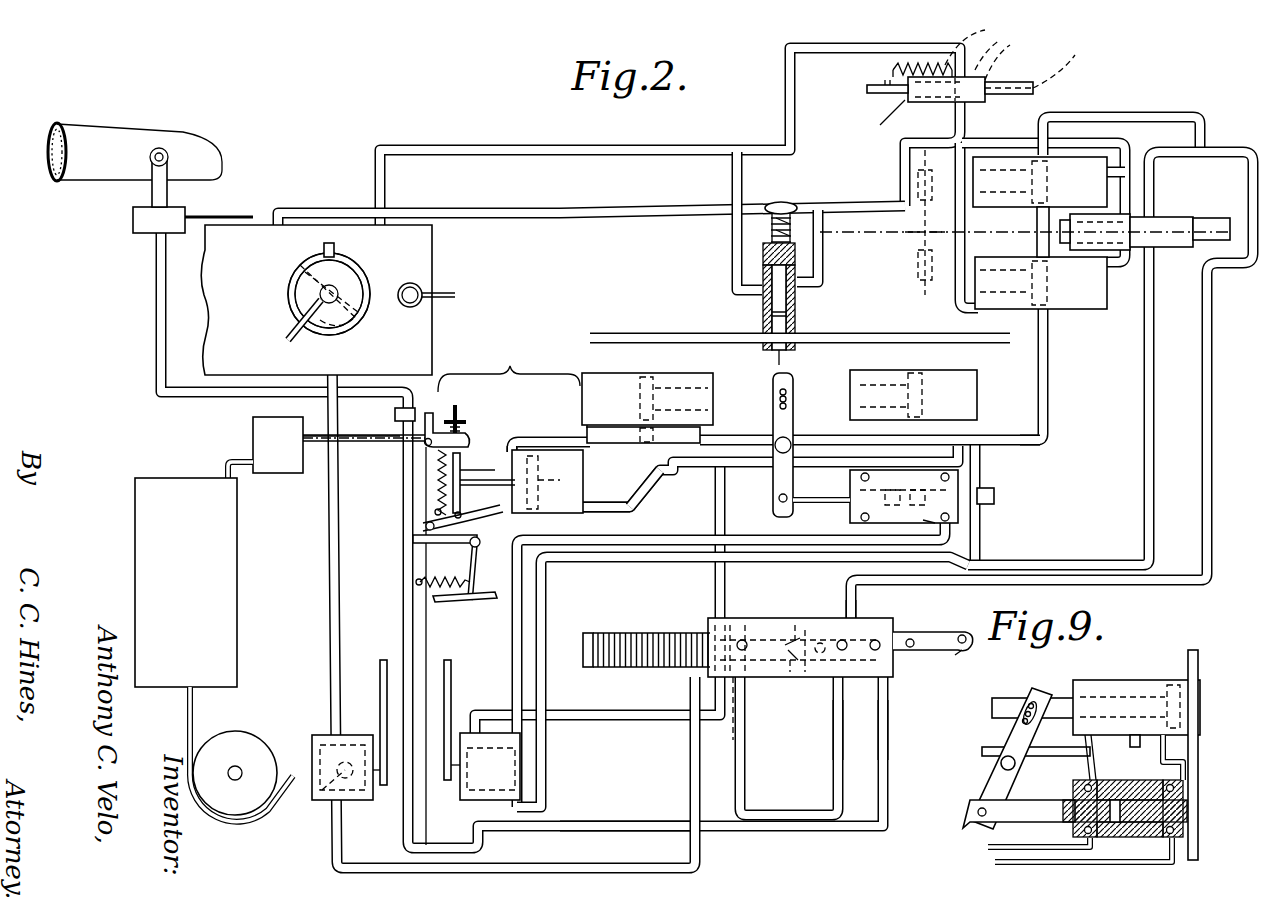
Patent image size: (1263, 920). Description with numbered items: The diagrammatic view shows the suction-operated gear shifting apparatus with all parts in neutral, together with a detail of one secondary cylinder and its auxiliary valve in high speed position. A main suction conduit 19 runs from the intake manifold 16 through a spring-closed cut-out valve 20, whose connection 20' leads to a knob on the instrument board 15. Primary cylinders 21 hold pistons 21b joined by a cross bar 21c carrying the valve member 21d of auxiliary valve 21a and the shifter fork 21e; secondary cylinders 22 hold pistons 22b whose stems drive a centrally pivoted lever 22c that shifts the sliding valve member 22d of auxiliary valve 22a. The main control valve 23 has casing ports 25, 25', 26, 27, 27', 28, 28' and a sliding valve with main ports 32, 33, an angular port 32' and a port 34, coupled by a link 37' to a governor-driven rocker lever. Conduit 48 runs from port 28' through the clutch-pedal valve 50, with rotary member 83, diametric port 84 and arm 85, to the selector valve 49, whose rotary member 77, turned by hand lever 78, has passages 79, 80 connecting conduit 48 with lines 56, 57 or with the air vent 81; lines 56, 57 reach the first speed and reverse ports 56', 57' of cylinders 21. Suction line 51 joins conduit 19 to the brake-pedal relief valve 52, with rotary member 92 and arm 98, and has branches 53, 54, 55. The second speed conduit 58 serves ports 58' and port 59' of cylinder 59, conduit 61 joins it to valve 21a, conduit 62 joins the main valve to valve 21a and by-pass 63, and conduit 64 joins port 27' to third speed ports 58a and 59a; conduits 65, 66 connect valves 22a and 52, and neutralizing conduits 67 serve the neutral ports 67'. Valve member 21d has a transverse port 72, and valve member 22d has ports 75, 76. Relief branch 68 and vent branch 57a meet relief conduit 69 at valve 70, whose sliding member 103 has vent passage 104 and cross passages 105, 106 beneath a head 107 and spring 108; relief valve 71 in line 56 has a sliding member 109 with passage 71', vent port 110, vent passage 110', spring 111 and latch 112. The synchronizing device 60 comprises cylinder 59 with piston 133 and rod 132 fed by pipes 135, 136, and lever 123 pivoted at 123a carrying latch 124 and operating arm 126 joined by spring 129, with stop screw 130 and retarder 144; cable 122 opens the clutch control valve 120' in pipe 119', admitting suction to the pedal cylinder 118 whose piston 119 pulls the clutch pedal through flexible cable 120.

In FIG. 2, the instrument board 15 is at (432, 320).
In FIG. 2, the intake manifold 16 is at (134, 133).
In FIG. 2, the main suction pipe 19 is at (158, 275).
In FIG. 2, the cut-out valve 20 is at (135, 190).
In FIG. 2, the connection 20' is at (219, 201).
In FIG. 2, the primary gear shifting cylinders 21 is at (1085, 155).
In FIG. 2, the auxiliary control valve 21a is at (1160, 280).
In FIG. 2, the piston 21b is at (1047, 160).
In FIG. 2, the cross bar 21c is at (920, 233).
In FIG. 2, the movable valve member 21d is at (1203, 225).
In FIG. 2, the shifter fork 21e is at (922, 262).
In FIG. 2, the secondary gear shifting cylinders 22 is at (628, 372).
In FIG. 9, the secondary gear shifting cylinders 22 is at (1155, 680).
In FIG. 2, the auxiliary control valve 22a is at (923, 521).
In FIG. 9, the auxiliary control valve 22a is at (1160, 768).
In FIG. 2, the piston 22b is at (655, 385).
In FIG. 9, the piston 22b is at (1165, 700).
In FIG. 2, the centrally pivoted lever 22c is at (772, 390).
In FIG. 9, the centrally pivoted lever 22c is at (1035, 690).
In FIG. 2, the sliding valve member 22d is at (995, 495).
In FIG. 9, the sliding valve member 22d is at (1052, 800).
In FIG. 2, the main control valve 23 is at (800, 672).
In FIG. 2, the port 25 is at (773, 655).
In FIG. 2, the port 25' is at (731, 632).
In FIG. 2, the port 26 is at (840, 645).
In FIG. 2, the port 27 is at (933, 658).
In FIG. 2, the port 27' is at (903, 631).
In FIG. 2, the port 28 is at (758, 671).
In FIG. 2, the port 28' is at (722, 713).
In FIG. 2, the main port 32 is at (667, 629).
In FIG. 2, the angular port 32' is at (808, 655).
In FIG. 2, the main port 33 is at (860, 608).
In FIG. 2, the port 34 is at (798, 630).
In FIG. 2, the link 37' is at (965, 657).
In FIG. 2, the suction conduit 48 is at (328, 568).
In FIG. 2, the selector valve 49 is at (340, 265).
In FIG. 2, the automatic control valve 50 is at (318, 735).
In FIG. 2, the suction line 51 is at (655, 822).
In FIG. 2, the neutralizing or relief valve 52 is at (482, 735).
In FIG. 2, the branch 53 is at (746, 742).
In FIG. 2, the branch 54 is at (838, 712).
In FIG. 2, the branch 55 is at (889, 727).
In FIG. 2, the suction line 56 is at (670, 172).
In FIG. 2, the first speed port 56' is at (1141, 210).
In FIG. 2, the suction line 57 is at (591, 236).
In FIG. 2, the reverse port 57' is at (1039, 225).
In FIG. 2, the vent branch 57a is at (880, 232).
In FIG. 2, the second speed conduit 58 is at (770, 476).
In FIG. 9, the second speed conduit 58 is at (1026, 727).
In FIG. 2, the second speed port 58' is at (699, 411).
In FIG. 2, the third speed port 58a is at (990, 412).
In FIG. 2, the control cylinder 59 is at (563, 481).
In FIG. 2, the second speed port 59' is at (503, 422).
In FIG. 2, the third speed port 59a is at (605, 510).
In FIG. 2, the synchronizing device 60 is at (509, 368).
In FIG. 2, the conduit 61 is at (1066, 572).
In FIG. 2, the conduit 62 is at (1138, 586).
In FIG. 2, the by-pass 63 is at (1215, 158).
In FIG. 2, the suction conduit 64 is at (865, 468).
In FIG. 9, the suction conduit 64 is at (1190, 818).
In FIG. 2, the conduit 65 is at (655, 560).
In FIG. 9, the conduit 65 is at (1178, 855).
In FIG. 2, the conduit 66 is at (603, 547).
In FIG. 9, the conduit 66 is at (1047, 850).
In FIG. 2, the neutralizing conduits 67 is at (853, 419).
In FIG. 2, the neutralizing port 67' is at (834, 315).
In FIG. 2, the relief branch 68 is at (732, 238).
In FIG. 2, the relief conduit 69 is at (672, 333).
In FIG. 9, the relief conduit 69 is at (1198, 662).
In FIG. 2, the relief valve 70 is at (812, 270).
In FIG. 2, the relief valve 71 is at (951, 77).
In FIG. 2, the passage 71' is at (976, 35).
In FIG. 2, the transverse port 72 is at (1145, 228).
In FIG. 9, the port 75 is at (1097, 780).
In FIG. 9, the port 76 is at (1122, 797).
In FIG. 2, the rotary valve member 77 is at (355, 282).
In FIG. 2, the hand lever 78 is at (288, 330).
In FIG. 2, the port or passage 79 is at (362, 318).
In FIG. 2, the port or passage 80 is at (276, 283).
In FIG. 2, the air vent 81 is at (324, 253).
In FIG. 2, the rotary valve member 83 is at (340, 790).
In FIG. 2, the diametric port 84 is at (345, 762).
In FIG. 2, the operating arm 85 is at (380, 668).
In FIG. 2, the rotary valve member 92 is at (467, 788).
In FIG. 2, the operating arm 98 is at (452, 683).
In FIG. 2, the sliding valve member 103 is at (763, 241).
In FIG. 2, the vent passage 104 is at (748, 350).
In FIG. 2, the cross passage 105 is at (760, 278).
In FIG. 2, the cross passage 106 is at (763, 315).
In FIG. 2, the operating button 107 is at (781, 203).
In FIG. 2, the spring 108 is at (801, 240).
In FIG. 2, the sliding valve member 109 is at (1012, 82).
In FIG. 2, the vent port 110 is at (1008, 51).
In FIG. 2, the vent passage 110' is at (1068, 58).
In FIG. 2, the spring 111 is at (912, 60).
In FIG. 2, the locking member or latch 112 is at (880, 94).
In FIG. 2, the pedal actuating cylinder 118 is at (240, 600).
In FIG. 2, the piston 119 is at (353, 456).
In FIG. 2, the pipe 119' is at (219, 457).
In FIG. 2, the flexible cable 120 is at (241, 754).
In FIG. 2, the clutch control valve 120' is at (284, 458).
In FIG. 2, the cable 122 is at (355, 435).
In FIG. 2, the lever 123 is at (440, 505).
In FIG. 2, the pivot 123a is at (460, 485).
In FIG. 2, the dog or latch 124 is at (467, 430).
In FIG. 2, the operating arm 126 is at (474, 522).
In FIG. 2, the spring 129 is at (436, 478).
In FIG. 2, the stop screw 130 is at (455, 406).
In FIG. 2, the piston rod 132 is at (487, 469).
In FIG. 2, the piston 133 is at (540, 500).
In FIG. 2, the pipe 135 is at (534, 438).
In FIG. 2, the pipe 136 is at (652, 499).
In FIG. 2, the valve retarder 144 is at (470, 566).